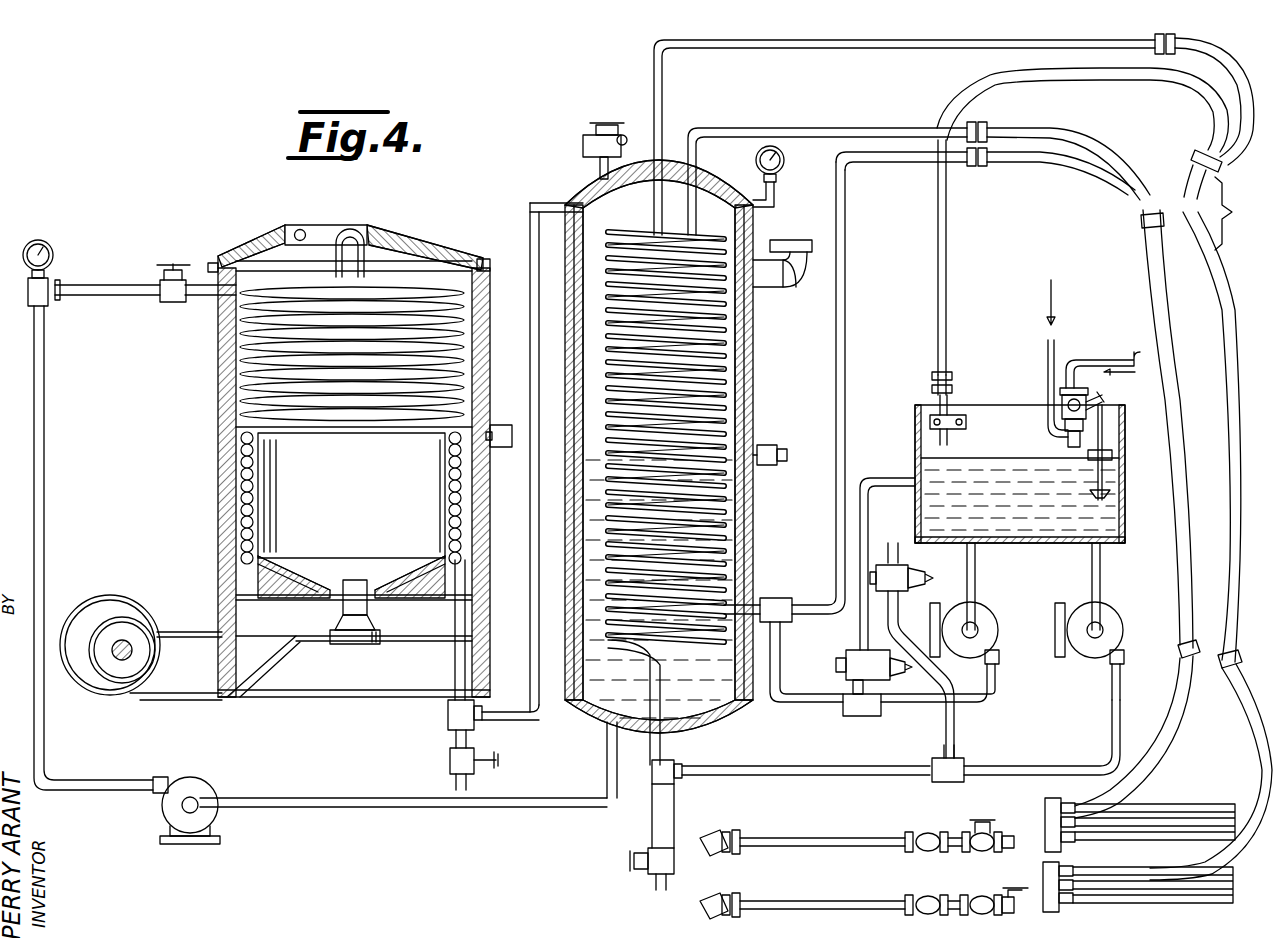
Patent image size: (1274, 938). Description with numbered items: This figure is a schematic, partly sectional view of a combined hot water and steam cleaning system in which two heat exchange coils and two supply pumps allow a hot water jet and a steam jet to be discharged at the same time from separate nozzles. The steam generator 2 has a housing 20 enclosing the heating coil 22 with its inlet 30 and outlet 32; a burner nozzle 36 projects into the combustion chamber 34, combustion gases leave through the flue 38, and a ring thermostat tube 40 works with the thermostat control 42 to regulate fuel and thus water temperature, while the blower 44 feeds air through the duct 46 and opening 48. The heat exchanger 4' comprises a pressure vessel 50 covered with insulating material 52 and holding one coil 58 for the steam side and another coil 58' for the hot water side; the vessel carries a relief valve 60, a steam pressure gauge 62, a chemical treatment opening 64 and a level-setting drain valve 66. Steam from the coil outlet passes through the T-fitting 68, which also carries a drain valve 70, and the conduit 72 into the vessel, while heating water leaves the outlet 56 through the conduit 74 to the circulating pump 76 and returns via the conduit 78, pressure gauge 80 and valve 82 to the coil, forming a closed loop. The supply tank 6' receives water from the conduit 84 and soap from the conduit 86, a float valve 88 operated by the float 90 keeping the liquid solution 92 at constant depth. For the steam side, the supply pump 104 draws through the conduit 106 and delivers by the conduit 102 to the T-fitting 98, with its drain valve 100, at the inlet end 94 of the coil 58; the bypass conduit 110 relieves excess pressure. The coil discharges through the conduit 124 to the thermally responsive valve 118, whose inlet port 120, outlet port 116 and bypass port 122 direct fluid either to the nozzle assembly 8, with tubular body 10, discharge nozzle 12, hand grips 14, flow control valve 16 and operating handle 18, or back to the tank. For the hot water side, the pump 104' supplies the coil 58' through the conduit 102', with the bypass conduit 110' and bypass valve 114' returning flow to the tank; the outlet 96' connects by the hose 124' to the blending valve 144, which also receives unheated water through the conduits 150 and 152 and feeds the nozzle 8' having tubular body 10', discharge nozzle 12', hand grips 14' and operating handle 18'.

The steam generator 2 is at (428, 224).
The heat exchanger 4' is at (555, 127).
The supply tank 6' is at (1020, 453).
The nozzle assembly 8 is at (881, 883).
The nozzle 8' is at (901, 810).
The tubular body 10 is at (822, 884).
The tubular body 10' is at (822, 829).
The discharge nozzle 12 is at (717, 897).
The discharge nozzle 12' is at (728, 852).
The hand grips 14 is at (926, 891).
The hand grips 14' is at (937, 823).
The flow control valve 16 is at (975, 898).
The operating handle 18 is at (1001, 881).
The operating handle 18' is at (992, 818).
The housing 20 is at (492, 268).
The heating coil 22 is at (465, 310).
The inlet 30 is at (224, 312).
The outlet 32 is at (452, 685).
The combustion chamber 34 is at (312, 567).
The burner nozzle 36 is at (356, 585).
The flue 38 is at (326, 236).
The ring thermostat tube 40 is at (384, 430).
The thermostat control 42 is at (500, 424).
The blower 44 is at (112, 595).
The duct 46 is at (130, 697).
The opening 48 is at (328, 603).
The pressure vessel 50 is at (752, 350).
The insulating material 52 is at (746, 330).
The heating-water outlet 56 is at (616, 708).
The heat exchange coil 58 is at (699, 437).
The heat exchange coil 58' is at (759, 575).
The steam pop-off relief valve 60 is at (604, 123).
The steam pressure gauge 62 is at (786, 160).
The chemical treatment opening 64 is at (790, 282).
The drain valve 66 is at (766, 445).
The T-fitting 68 is at (446, 714).
The drain valve 70 is at (448, 760).
The conduit 72 is at (528, 472).
The conduit 74 is at (350, 810).
The circulating pump 76 is at (200, 782).
The conduit 78 is at (46, 412).
The pressure gauge 80 is at (52, 258).
The valve 82 is at (168, 300).
The conduit 84 is at (1138, 352).
The conduit 86 is at (1056, 345).
The float valve 88 is at (1060, 390).
The float 90 is at (1112, 432).
The liquid solution 92 is at (1011, 462).
The inlet end 94 is at (665, 752).
The outlet 96' is at (958, 221).
The T-fitting 98 is at (650, 782).
The drain valve 100 is at (676, 855).
The conduit 102 is at (901, 741).
The conduit 102' is at (801, 650).
The solution supply pump 104 is at (1099, 640).
The pump 104' is at (961, 622).
The conduit 106 is at (1104, 570).
The bypass conduit 110 is at (980, 726).
The bypass conduit 110' is at (901, 544).
The bypass valve 114' is at (914, 650).
The outlet port 116 is at (1043, 880).
The thermally responsive valve 118 is at (1046, 866).
The inlet port 120 is at (1061, 888).
The bypass port 122 is at (1070, 866).
The conduit 124 is at (957, 138).
The hose 124' is at (1201, 417).
The blending valve 144 is at (1065, 800).
The flexible conduit 150 is at (1000, 163).
The conduit 152 is at (848, 297).